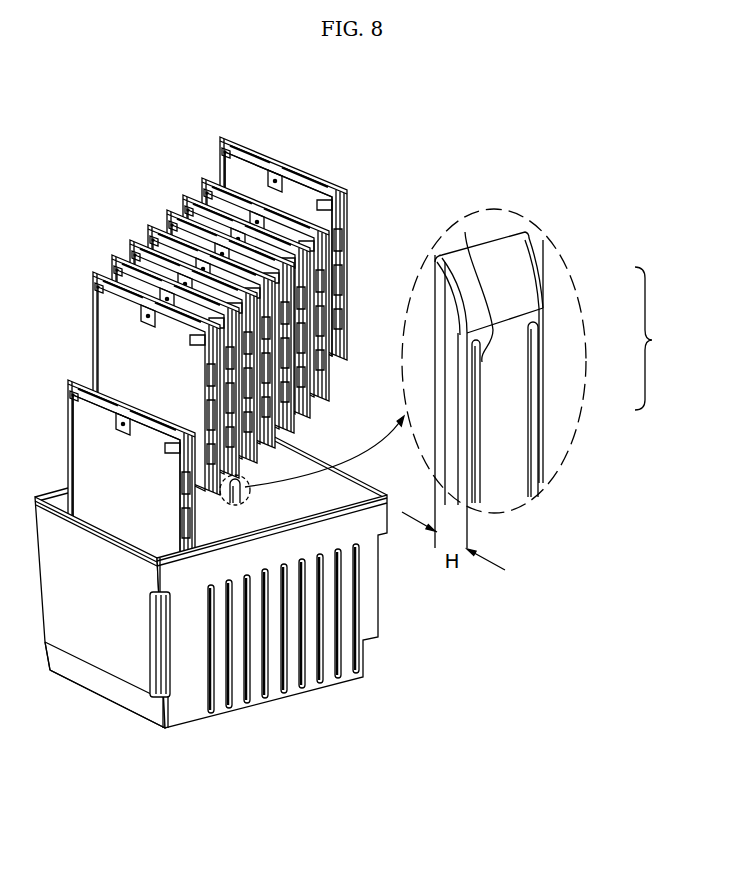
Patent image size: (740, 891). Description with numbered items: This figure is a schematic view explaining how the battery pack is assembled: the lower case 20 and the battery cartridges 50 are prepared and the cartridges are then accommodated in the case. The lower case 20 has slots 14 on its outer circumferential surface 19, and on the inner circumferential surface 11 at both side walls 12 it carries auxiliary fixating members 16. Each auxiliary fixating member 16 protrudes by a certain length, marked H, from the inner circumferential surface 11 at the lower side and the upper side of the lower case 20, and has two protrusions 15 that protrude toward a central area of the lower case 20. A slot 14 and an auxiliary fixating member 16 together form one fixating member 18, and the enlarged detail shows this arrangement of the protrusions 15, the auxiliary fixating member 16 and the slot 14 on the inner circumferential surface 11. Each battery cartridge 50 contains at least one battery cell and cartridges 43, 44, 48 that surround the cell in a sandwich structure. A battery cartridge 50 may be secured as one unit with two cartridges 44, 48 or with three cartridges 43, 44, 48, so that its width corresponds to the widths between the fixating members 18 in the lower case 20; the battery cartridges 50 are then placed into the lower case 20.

The inner circumferential surface 11 is at (535, 362).
The side wall 12 is at (187, 712).
The slot 14 is at (226, 714).
The protrusion 15 is at (465, 232).
The auxiliary fixating member 16 is at (547, 278).
The fixating member 18 is at (661, 338).
The outer circumferential surface 19 is at (232, 632).
The lower case 20 is at (73, 682).
The cartridge 43 is at (68, 391).
The cartridge 44 is at (267, 224).
The cartridge 48 is at (231, 134).
The battery cartridge 50 is at (104, 490).